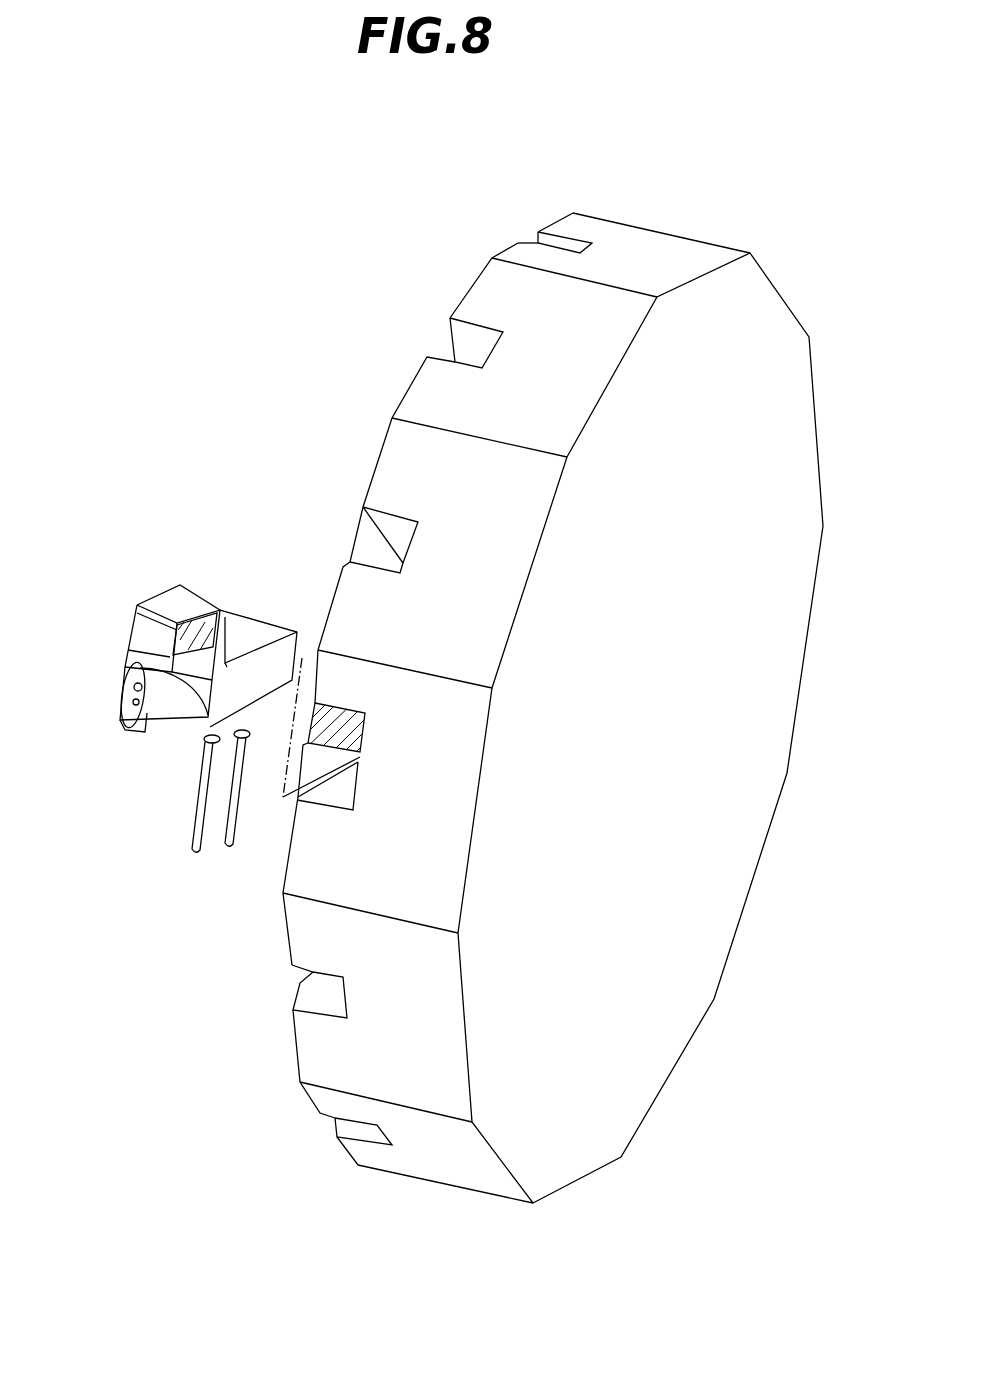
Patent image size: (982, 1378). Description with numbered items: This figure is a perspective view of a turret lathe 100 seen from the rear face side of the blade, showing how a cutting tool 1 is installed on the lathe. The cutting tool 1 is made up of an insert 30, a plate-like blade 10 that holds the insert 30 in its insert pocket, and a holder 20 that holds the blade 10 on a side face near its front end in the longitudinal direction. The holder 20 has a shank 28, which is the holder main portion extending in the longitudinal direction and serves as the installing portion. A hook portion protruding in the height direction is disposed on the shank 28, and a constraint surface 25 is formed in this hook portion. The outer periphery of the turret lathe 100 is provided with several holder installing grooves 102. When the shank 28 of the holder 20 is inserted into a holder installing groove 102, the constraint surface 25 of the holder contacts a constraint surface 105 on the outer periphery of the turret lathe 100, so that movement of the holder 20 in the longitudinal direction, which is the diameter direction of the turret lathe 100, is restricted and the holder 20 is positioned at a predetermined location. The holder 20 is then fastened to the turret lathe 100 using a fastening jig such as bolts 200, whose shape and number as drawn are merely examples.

The cutting tool 1 is at (172, 663).
The blade 10 is at (126, 671).
The holder 20 is at (161, 585).
The constraint surface 25 is at (208, 587).
The shank 28 is at (273, 657).
The insert 30 is at (121, 729).
The turret lathe 100 is at (708, 305).
The holder installing groove 102 is at (534, 231).
The constraint surface 105 is at (382, 723).
The bolts 200 is at (178, 865).